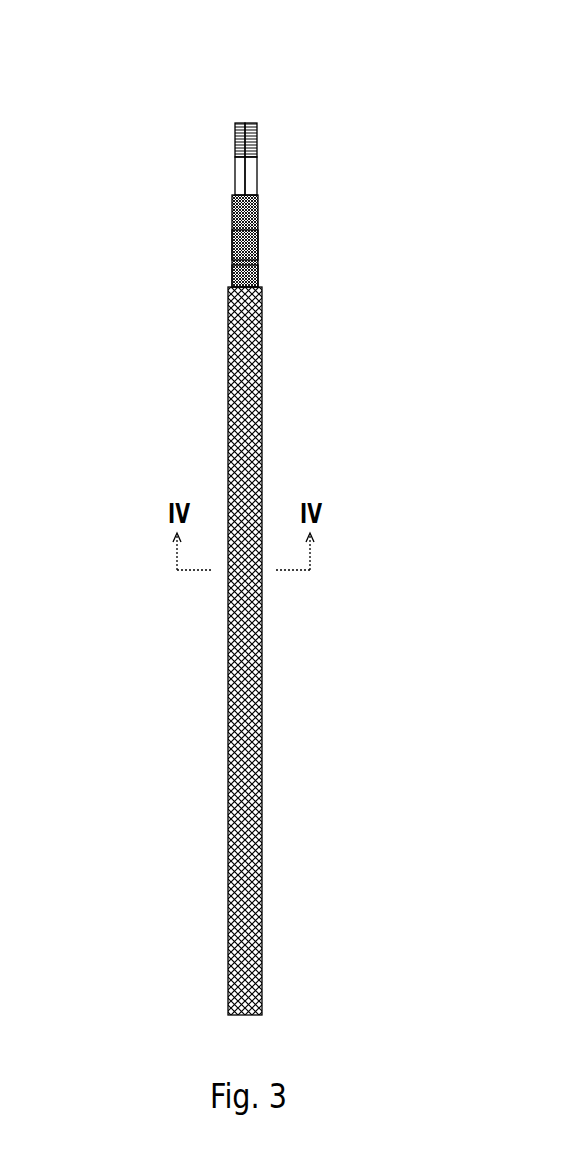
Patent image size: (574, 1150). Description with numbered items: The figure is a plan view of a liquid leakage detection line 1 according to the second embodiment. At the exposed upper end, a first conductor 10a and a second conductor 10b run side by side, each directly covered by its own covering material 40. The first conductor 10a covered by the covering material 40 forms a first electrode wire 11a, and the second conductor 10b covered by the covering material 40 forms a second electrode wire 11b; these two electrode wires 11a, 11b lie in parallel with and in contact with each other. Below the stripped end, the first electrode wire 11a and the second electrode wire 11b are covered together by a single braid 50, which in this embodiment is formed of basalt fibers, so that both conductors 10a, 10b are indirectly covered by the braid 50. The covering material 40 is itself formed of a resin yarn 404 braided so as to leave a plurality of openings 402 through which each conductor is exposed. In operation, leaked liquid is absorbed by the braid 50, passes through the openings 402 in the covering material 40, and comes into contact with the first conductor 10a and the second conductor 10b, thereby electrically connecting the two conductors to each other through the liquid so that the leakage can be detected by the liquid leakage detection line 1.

The liquid leakage detection line 1 is at (243, 97).
The first electrode wire 11a is at (153, 150).
The second electrode wire 11b is at (333, 150).
The first conductor 10a is at (235, 170).
The second conductor 10b is at (257, 170).
The covering material 40 is at (233, 210).
The openings 402 is at (257, 243).
The resin yarn 404 is at (259, 277).
The braid 50 is at (262, 387).